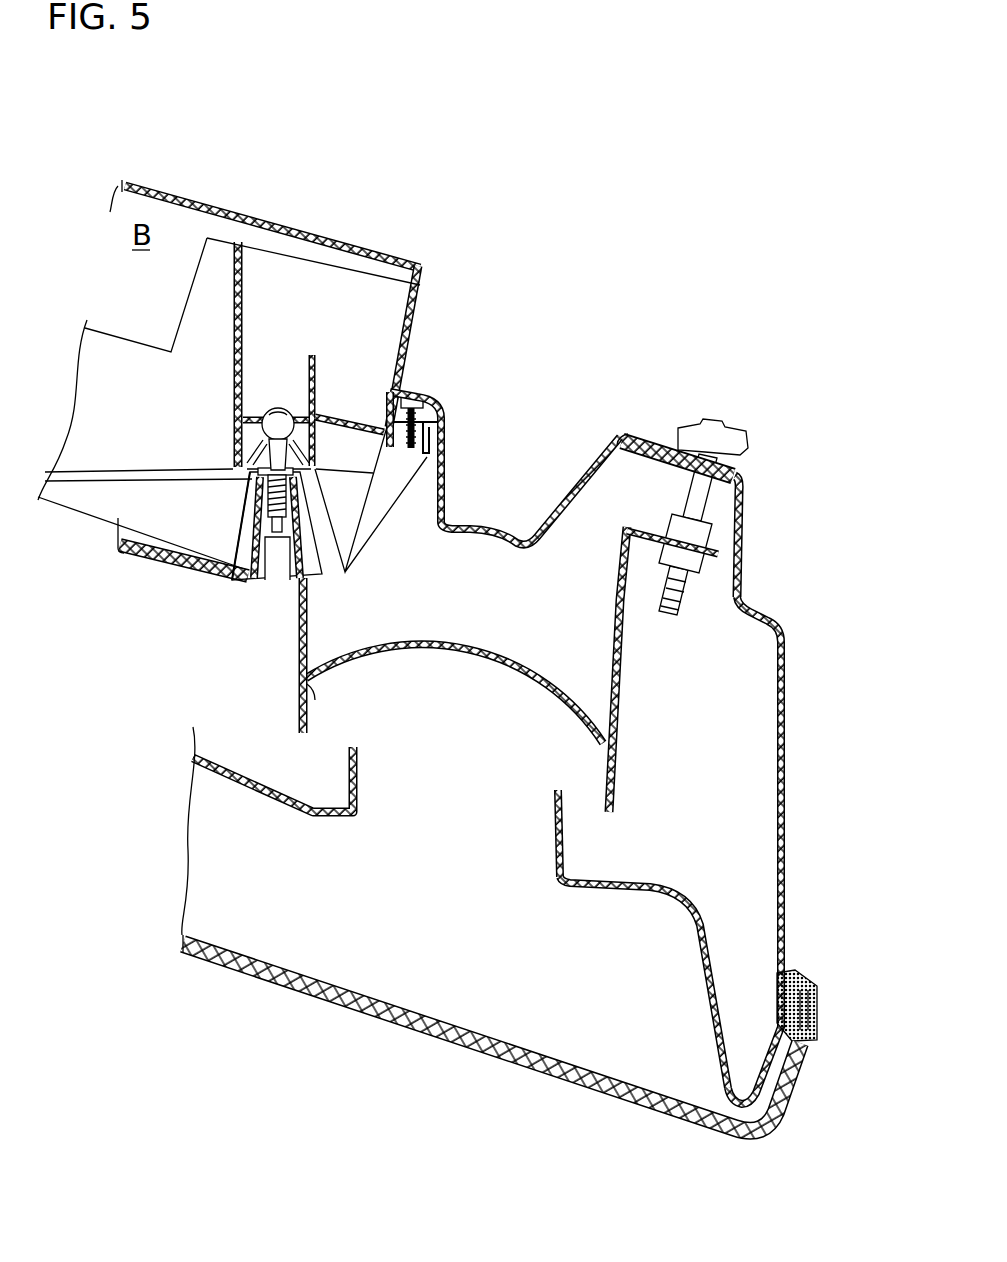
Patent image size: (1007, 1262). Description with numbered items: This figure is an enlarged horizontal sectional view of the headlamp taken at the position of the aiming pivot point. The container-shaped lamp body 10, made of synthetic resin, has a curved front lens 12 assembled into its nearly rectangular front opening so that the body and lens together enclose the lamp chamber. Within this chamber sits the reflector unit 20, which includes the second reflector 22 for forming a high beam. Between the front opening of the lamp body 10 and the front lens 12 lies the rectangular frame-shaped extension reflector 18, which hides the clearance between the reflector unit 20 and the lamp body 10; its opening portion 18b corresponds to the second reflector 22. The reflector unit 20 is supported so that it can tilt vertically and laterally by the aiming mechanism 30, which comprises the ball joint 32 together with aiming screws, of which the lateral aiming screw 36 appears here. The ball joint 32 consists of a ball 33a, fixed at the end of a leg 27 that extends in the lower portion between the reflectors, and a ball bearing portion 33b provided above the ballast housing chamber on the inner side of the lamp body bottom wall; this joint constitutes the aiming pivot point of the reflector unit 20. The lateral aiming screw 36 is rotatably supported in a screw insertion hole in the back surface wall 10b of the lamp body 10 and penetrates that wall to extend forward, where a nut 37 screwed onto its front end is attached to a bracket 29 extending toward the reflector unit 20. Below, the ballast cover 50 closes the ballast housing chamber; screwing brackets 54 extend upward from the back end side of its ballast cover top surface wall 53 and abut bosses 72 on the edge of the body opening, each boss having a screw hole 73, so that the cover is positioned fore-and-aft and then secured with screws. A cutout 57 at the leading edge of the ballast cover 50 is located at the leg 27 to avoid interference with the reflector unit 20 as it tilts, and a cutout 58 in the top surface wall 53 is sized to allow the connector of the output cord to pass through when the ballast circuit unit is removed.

The lamp body 10 is at (790, 745).
The back surface wall 10b is at (652, 432).
The front lens 12 is at (313, 1003).
The extension reflector 18 is at (602, 894).
The opening portion 18b is at (552, 833).
The reflector unit 20 is at (293, 663).
The second reflector 22 is at (423, 650).
The leg 27 is at (255, 503).
The bracket 29 is at (622, 534).
The aiming mechanism 30 is at (551, 356).
The ball joint 32 is at (351, 283).
The ball 33a is at (272, 408).
The ball bearing portion 33b is at (283, 408).
The lateral aiming screw 36 is at (759, 517).
The nut 37 is at (700, 530).
The ballast cover 50 is at (216, 312).
The ballast cover top surface wall 53 is at (116, 407).
The screwing bracket 54 is at (353, 400).
The cutout 57 is at (246, 528).
The cutout 58 is at (118, 330).
The boss 72 is at (440, 420).
The screw hole 73 is at (420, 385).